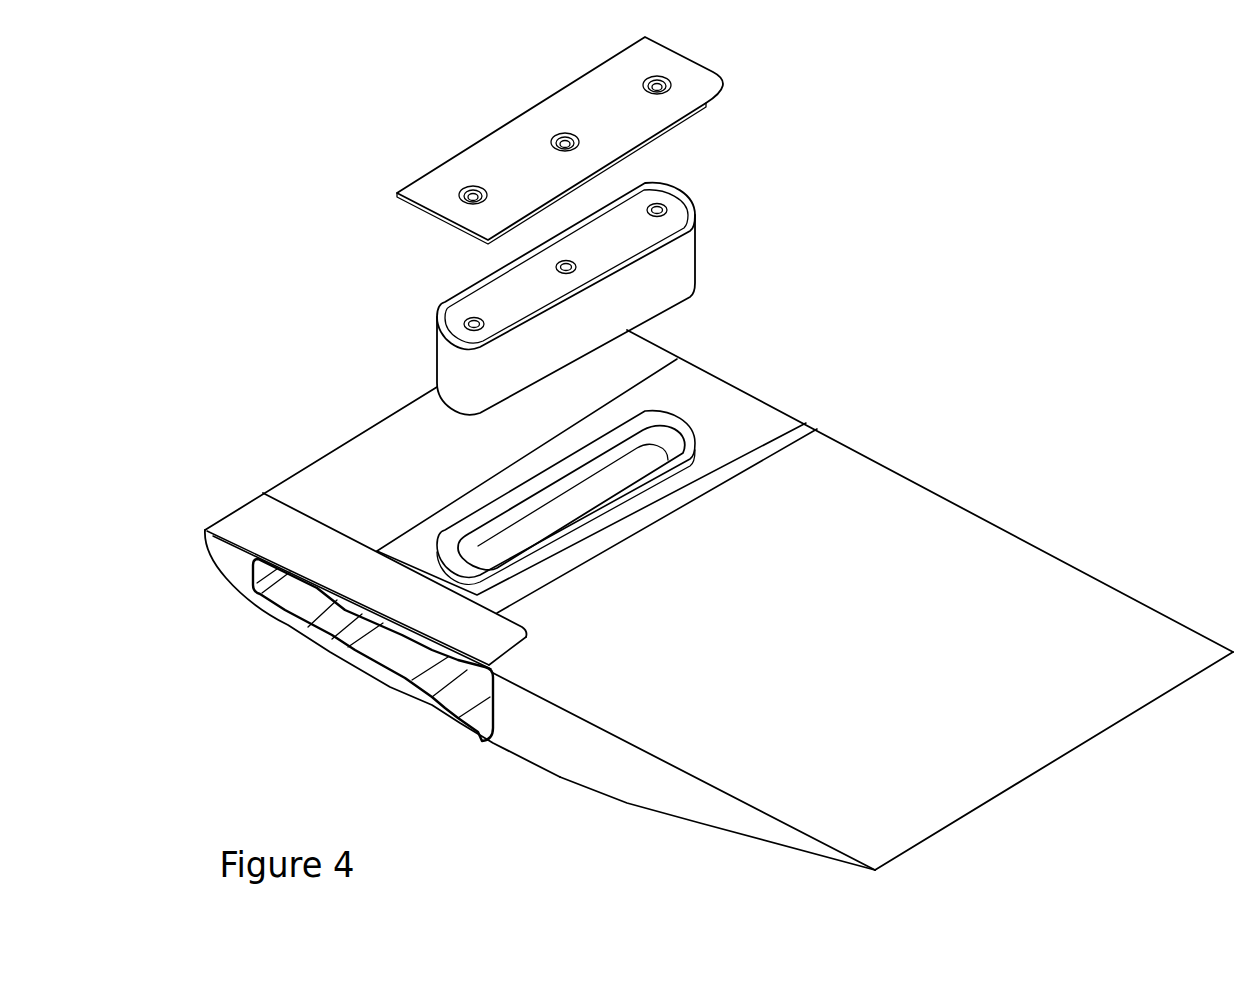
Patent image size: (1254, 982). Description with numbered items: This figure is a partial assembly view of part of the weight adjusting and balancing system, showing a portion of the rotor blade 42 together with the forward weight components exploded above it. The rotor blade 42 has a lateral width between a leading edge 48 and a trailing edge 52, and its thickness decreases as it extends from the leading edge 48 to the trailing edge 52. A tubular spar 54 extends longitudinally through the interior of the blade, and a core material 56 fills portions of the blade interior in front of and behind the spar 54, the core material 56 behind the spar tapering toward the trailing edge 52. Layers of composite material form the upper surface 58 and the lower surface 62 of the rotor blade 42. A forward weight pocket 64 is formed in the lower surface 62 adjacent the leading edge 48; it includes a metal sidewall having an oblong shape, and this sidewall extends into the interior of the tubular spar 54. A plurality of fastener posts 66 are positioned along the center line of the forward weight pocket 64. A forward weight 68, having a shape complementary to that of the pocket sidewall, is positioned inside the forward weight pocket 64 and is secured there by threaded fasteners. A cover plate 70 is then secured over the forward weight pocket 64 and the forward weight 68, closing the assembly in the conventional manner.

The rotor blade 42 is at (328, 482).
The leading edge 48 is at (205, 530).
The trailing edge 52 is at (1085, 743).
The tubular spar 54 is at (293, 598).
The core material 56 is at (232, 560).
The upper surface 58 is at (948, 527).
The lower surface 62 is at (747, 837).
The forward weight pocket 64 is at (683, 260).
The fastener posts 66 is at (666, 205).
The forward weight 68 is at (485, 300).
The cover plate 70 is at (663, 57).